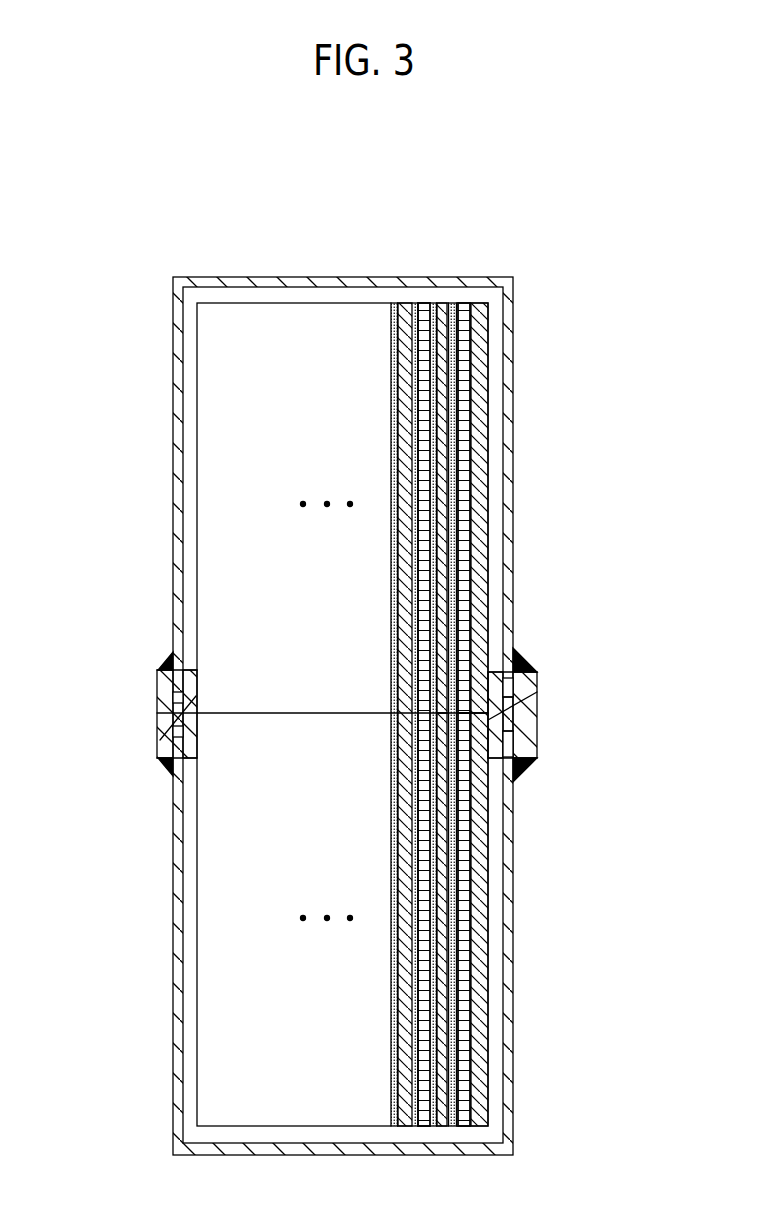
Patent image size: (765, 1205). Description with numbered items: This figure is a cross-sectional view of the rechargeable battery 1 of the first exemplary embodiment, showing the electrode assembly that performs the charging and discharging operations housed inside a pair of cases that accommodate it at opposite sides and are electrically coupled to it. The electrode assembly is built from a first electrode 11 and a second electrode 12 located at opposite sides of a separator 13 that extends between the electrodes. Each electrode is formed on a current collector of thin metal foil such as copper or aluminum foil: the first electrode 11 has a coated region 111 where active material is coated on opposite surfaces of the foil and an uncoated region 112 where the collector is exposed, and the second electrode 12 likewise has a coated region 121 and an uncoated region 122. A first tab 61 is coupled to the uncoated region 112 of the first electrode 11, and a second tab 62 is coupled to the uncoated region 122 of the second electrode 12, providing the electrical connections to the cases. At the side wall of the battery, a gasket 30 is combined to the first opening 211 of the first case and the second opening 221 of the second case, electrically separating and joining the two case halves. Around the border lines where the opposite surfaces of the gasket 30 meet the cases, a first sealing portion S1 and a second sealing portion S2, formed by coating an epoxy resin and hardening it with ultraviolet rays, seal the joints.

The rechargeable battery 1 is at (363, 219).
The separator 13 is at (463, 310).
The second electrode 12 is at (588, 350).
The coated region 121 is at (457, 380).
The uncoated region 122 is at (470, 422).
The second tab 62 is at (485, 483).
The first electrode 11 is at (588, 903).
The coated region 111 is at (457, 930).
The uncoated region 112 is at (470, 976).
The first tab 61 is at (485, 1035).
The gasket 30 is at (162, 716).
The second opening 221 is at (160, 702).
The first opening 211 is at (160, 730).
The first sealing portion S1 is at (522, 778).
The second sealing portion S2 is at (522, 655).